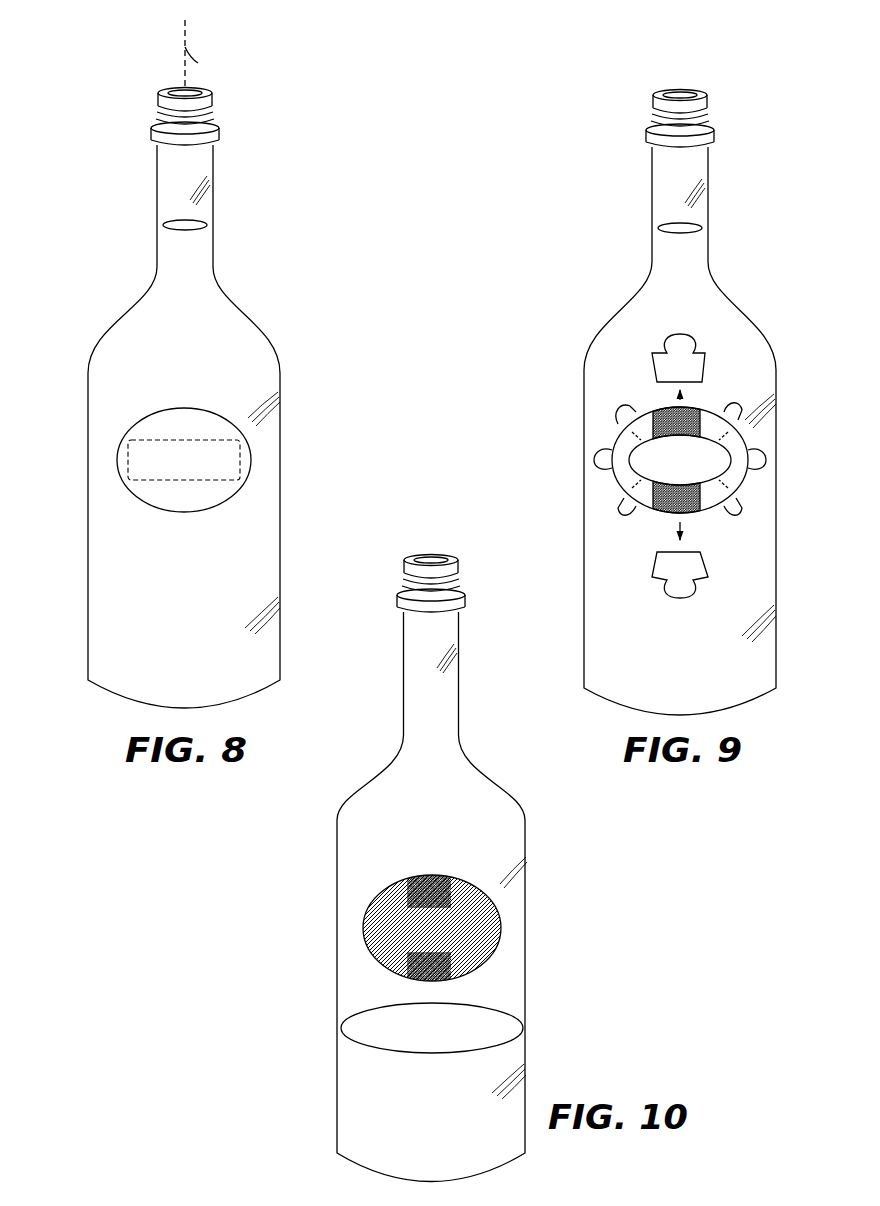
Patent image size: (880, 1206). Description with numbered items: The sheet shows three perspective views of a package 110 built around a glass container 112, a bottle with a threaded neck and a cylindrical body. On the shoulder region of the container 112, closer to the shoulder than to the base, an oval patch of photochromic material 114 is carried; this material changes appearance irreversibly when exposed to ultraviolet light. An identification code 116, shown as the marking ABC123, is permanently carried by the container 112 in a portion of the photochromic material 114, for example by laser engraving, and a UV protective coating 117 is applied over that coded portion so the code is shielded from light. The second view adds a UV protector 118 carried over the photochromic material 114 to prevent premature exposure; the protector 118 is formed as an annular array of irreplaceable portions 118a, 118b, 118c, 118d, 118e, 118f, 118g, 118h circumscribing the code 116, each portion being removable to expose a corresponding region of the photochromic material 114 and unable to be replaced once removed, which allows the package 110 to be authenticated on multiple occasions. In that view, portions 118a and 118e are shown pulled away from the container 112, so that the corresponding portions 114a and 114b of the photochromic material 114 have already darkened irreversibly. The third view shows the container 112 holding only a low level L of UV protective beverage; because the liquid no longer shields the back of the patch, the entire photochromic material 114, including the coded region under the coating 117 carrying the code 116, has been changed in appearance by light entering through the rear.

In FIG. 8, the package 110 is at (153, 364).
In FIG. 9, the package 110 is at (602, 126).
In FIG. 10, the package 110 is at (306, 1152).
In FIG. 8, the glass container 112 is at (64, 350).
In FIG. 8, the photochromic material 114 is at (116, 458).
In FIG. 9, the photochromic material 114 is at (680, 460).
In FIG. 10, the photochromic material 114 is at (362, 923).
In FIG. 9, the portion of the photochromic material 114a is at (692, 415).
In FIG. 9, the portion of the photochromic material 114b is at (692, 508).
In FIG. 8, the identification code 116 is at (190, 441).
In FIG. 9, the identification code 116 is at (657, 470).
In FIG. 10, the identification code 116 is at (453, 912).
In FIG. 8, the UV protective coating 117 is at (242, 448).
In FIG. 9, the UV protector 118 is at (606, 428).
In FIG. 9, the removable portion of the protector 118a is at (698, 340).
In FIG. 9, the removable portion of the protector 118b is at (755, 426).
In FIG. 9, the removable portion of the protector 118c is at (770, 458).
In FIG. 9, the removable portion of the protector 118d is at (742, 510).
In FIG. 9, the removable portion of the protector 118e is at (698, 600).
In FIG. 9, the removable portion of the protector 118f is at (618, 518).
In FIG. 9, the removable portion of the protector 118g is at (590, 458).
In FIG. 9, the removable portion of the protector 118h is at (622, 400).
In FIG. 10, the low level of liquid L is at (488, 1013).